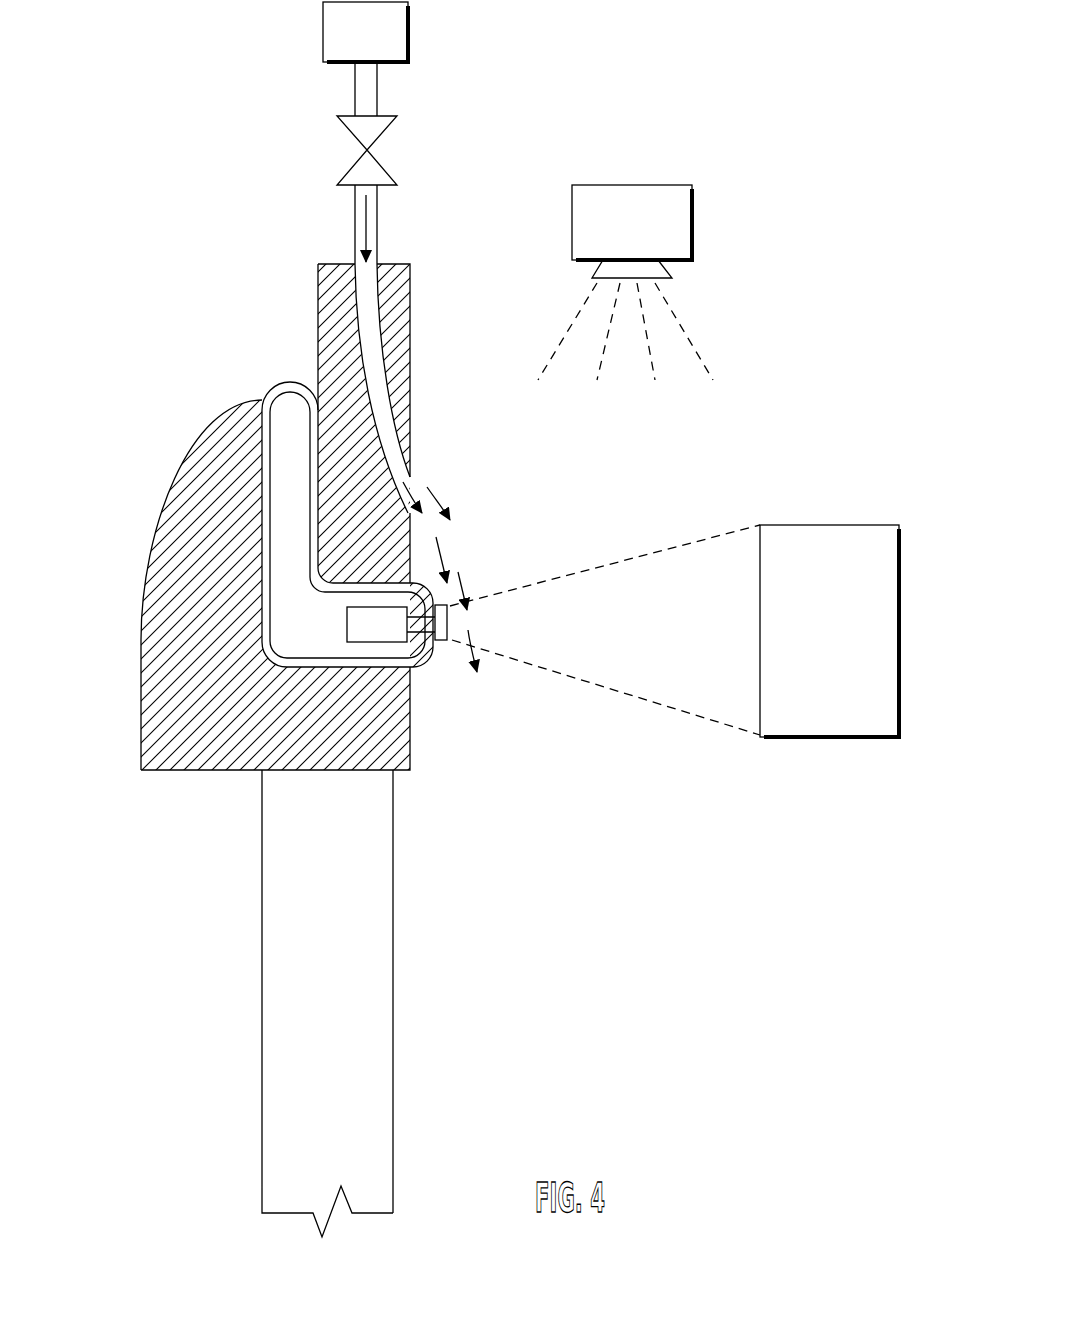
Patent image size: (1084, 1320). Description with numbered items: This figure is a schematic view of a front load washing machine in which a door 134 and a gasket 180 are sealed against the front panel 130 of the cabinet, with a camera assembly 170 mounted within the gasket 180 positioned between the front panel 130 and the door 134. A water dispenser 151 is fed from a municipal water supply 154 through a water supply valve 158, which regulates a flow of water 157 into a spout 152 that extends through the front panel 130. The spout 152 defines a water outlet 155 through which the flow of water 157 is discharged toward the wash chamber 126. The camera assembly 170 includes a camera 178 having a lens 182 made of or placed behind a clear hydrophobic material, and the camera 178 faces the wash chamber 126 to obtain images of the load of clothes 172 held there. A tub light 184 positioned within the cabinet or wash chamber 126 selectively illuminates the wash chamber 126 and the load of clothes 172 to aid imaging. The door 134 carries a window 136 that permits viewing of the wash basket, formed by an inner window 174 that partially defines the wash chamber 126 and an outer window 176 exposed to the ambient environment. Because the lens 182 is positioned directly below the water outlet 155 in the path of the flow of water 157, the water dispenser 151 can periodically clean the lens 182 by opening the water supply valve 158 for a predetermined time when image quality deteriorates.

The water dispenser 151 is at (240, 120).
The water supply 154 is at (383, 48).
The water supply valve 158 is at (388, 132).
The flow of water 157 is at (367, 223).
The front panel 130 is at (410, 328).
The door 134 is at (150, 540).
The spout 152 is at (395, 420).
The water outlet 155 is at (420, 478).
The gasket 180 is at (420, 583).
The camera assembly 170 is at (470, 572).
The camera 178 is at (391, 624).
The lens 182 is at (447, 620).
The load of clothes 172 is at (847, 634).
The tub light 184 is at (648, 238).
The inner window 174 is at (393, 877).
The outer window 176 is at (262, 895).
The window 136 is at (338, 946).
The wash chamber 126 is at (538, 946).